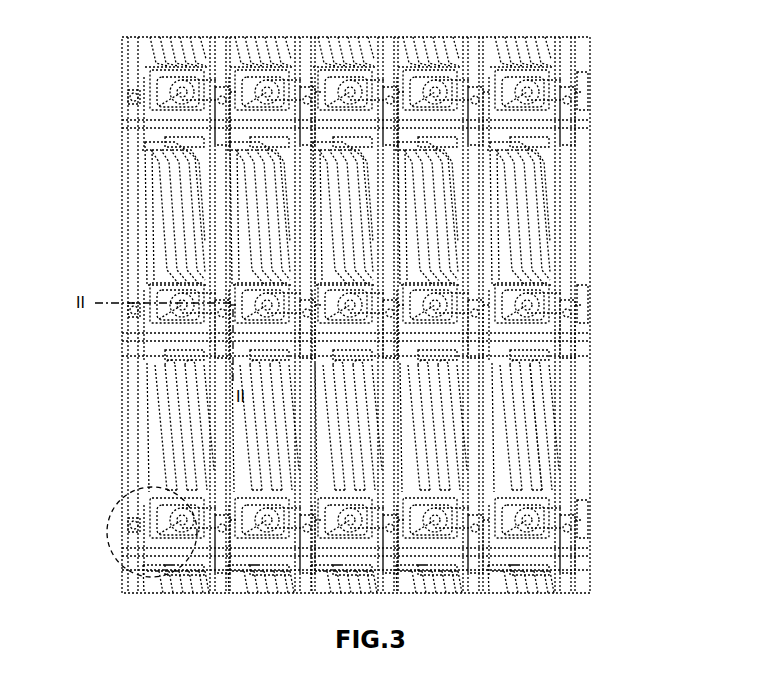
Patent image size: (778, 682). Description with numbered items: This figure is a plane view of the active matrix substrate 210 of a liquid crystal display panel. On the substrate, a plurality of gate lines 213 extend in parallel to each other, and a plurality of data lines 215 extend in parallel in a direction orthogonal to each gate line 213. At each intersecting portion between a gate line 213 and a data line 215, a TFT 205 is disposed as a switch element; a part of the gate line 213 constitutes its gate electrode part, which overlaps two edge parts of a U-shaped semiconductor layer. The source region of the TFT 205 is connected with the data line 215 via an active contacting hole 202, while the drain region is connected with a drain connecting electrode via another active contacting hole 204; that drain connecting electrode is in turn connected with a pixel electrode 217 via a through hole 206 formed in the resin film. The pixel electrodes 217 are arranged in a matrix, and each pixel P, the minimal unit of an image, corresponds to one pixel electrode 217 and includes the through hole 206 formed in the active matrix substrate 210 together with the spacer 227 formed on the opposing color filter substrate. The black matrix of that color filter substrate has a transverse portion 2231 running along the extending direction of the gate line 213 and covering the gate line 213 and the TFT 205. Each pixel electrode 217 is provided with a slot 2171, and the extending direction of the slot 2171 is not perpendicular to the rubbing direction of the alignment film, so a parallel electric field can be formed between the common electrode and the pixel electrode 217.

The active contacting hole 202 is at (132, 98).
The active contacting hole 204 is at (167, 98).
The TFT 205 is at (110, 518).
The through hole 206 is at (172, 512).
The active matrix substrate 210 is at (617, 217).
The gate line 213 is at (552, 340).
The data line 215 is at (568, 388).
The pixel electrode 217 is at (530, 482).
The slot 2171 is at (522, 443).
The spacer 227 is at (233, 295).
The transverse portion 2231 is at (237, 487).
The pixel P is at (343, 213).